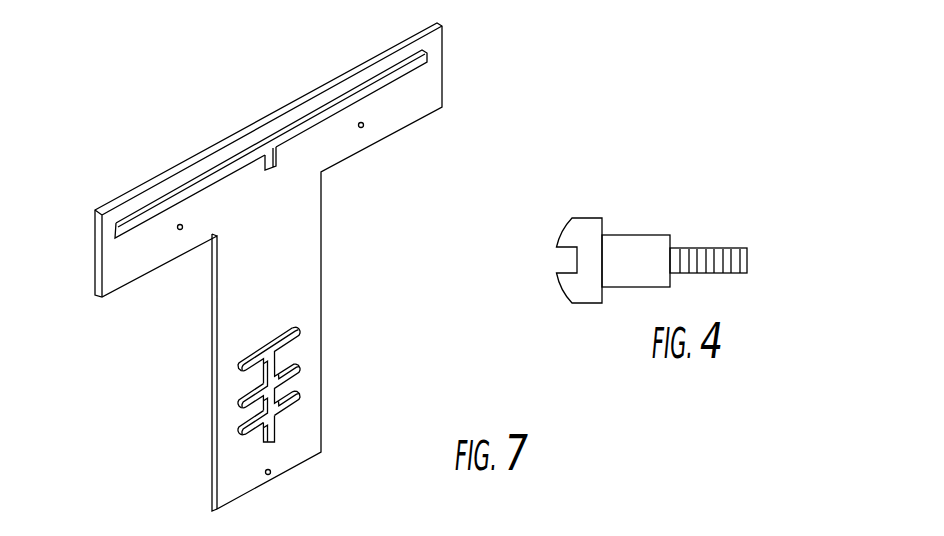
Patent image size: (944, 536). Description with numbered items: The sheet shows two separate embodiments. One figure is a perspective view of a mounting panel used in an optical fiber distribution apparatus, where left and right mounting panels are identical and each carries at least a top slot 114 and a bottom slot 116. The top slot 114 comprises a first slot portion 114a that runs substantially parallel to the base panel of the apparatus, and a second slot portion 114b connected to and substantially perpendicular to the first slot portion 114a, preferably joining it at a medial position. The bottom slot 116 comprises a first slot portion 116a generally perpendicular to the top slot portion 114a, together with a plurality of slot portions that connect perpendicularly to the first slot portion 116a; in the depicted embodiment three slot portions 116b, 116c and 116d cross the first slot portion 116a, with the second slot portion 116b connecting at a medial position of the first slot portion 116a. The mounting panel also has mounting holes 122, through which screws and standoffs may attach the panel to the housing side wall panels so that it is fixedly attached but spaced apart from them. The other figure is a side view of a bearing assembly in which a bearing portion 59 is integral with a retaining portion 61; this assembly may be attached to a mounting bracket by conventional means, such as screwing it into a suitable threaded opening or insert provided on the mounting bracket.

In FIG. 7, the top slot 114 is at (306, 149).
In FIG. 7, the first slot portion 114a is at (350, 93).
In FIG. 7, the second slot portion 114b is at (272, 168).
In FIG. 7, the bottom slot 116 is at (308, 351).
In FIG. 7, the first slot portion 116a is at (275, 428).
In FIG. 7, the second slot portion 116b is at (245, 353).
In FIG. 7, the slot portion 116c is at (243, 392).
In FIG. 7, the slot portion 116d is at (243, 425).
In FIG. 7, the mounting holes 122 is at (363, 127).
In FIG. 4, the retaining portion 61 is at (581, 218).
In FIG. 4, the bearing portion 59 is at (630, 235).